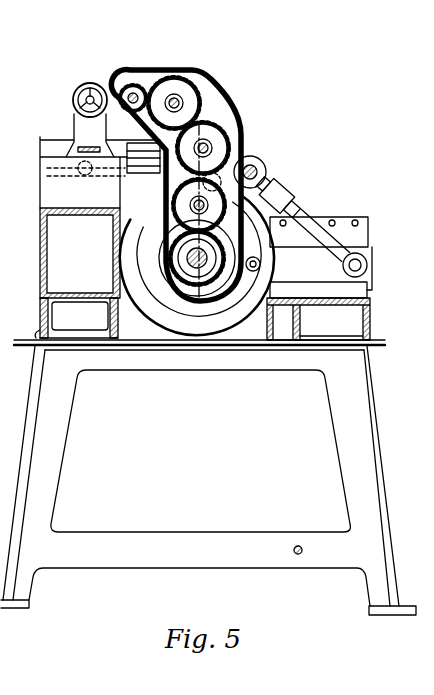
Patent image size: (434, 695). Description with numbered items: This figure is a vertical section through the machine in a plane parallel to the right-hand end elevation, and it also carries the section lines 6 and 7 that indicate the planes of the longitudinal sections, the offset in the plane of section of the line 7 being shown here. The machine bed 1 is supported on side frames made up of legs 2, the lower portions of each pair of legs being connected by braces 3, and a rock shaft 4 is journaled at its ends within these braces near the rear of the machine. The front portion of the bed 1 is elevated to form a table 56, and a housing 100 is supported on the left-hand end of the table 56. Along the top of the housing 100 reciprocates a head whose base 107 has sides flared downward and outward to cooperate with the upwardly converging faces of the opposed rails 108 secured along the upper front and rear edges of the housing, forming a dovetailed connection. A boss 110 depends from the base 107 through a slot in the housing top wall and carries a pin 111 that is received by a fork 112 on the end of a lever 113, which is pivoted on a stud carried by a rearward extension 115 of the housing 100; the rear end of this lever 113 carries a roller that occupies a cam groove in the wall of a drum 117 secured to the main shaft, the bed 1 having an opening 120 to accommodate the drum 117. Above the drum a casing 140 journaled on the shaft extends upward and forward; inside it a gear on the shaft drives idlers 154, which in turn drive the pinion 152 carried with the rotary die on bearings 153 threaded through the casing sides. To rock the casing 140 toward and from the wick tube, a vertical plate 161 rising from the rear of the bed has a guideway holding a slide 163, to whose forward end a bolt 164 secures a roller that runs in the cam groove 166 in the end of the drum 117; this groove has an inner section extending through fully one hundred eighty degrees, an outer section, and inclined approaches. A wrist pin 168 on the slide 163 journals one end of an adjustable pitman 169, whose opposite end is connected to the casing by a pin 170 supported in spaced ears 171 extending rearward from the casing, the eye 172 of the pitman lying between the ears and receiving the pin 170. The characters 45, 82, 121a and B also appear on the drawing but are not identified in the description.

The machine bed 1 is at (45, 313).
The legs 2 is at (50, 456).
The braces 3 is at (118, 538).
The rock shaft 4 is at (305, 549).
The section line 6— 6 is at (89, 410).
The section line 7— 7 is at (133, 130).
The main shaft 45 is at (183, 285).
The table 56 is at (58, 237).
The lever 82 is at (10, 77).
The housing 100 is at (48, 186).
The base 107 is at (78, 139).
The rails 108 is at (129, 149).
The boss 110 is at (28, 190).
The pin 111 is at (72, 193).
The fork 112 is at (73, 243).
The lever 113 is at (162, 170).
The rearward extension 115 is at (138, 163).
The drum 117 is at (212, 330).
The opening 120 is at (248, 341).
The hand wheel 121a is at (82, 88).
The knob B is at (73, 101).
The casing 140 is at (222, 108).
The pinion 152 is at (142, 80).
The bearings 153 is at (190, 101).
The idlers 154 is at (212, 80).
The vertical plate 161 is at (356, 232).
The slide 163 is at (373, 248).
The bolt 164 is at (261, 266).
The cam groove 166 is at (177, 305).
The wrist pin 168 is at (368, 262).
The adjustable pitman 169 is at (305, 221).
The pin 170 is at (266, 164).
The spaced ears 171 is at (252, 156).
The eye 172 is at (270, 178).